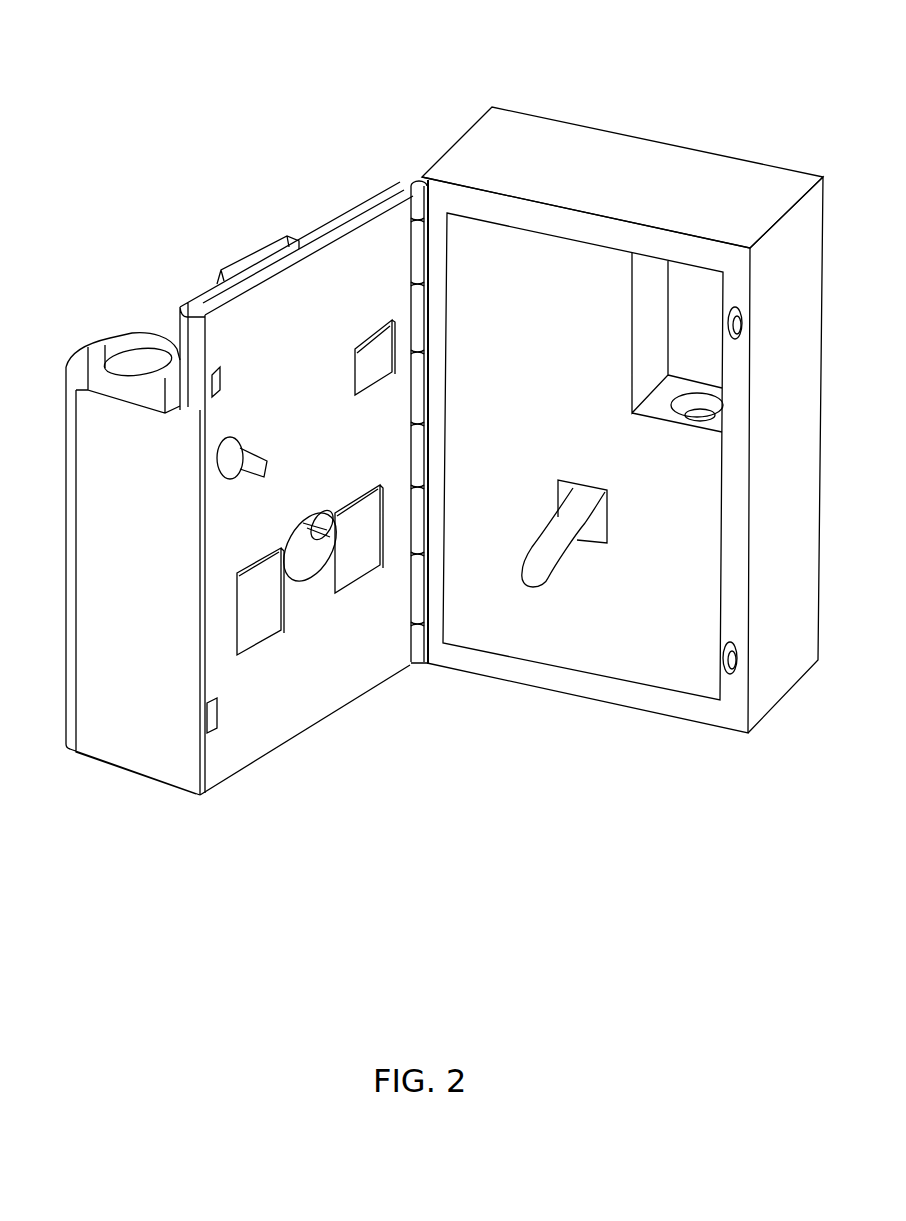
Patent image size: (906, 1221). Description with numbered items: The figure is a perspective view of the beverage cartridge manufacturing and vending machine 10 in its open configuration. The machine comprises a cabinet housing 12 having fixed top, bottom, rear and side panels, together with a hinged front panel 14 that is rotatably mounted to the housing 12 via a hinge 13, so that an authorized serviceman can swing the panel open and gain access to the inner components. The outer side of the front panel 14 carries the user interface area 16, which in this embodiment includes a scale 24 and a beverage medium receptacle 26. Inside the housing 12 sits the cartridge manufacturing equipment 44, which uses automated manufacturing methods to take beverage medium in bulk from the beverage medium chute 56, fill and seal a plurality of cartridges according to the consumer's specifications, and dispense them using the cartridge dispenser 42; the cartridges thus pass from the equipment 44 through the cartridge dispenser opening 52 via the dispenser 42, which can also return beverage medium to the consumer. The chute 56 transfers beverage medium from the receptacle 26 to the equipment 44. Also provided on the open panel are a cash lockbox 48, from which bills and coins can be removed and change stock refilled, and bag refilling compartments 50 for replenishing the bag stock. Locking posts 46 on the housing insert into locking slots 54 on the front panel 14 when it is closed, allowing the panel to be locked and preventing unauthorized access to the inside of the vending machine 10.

The vending machine 10 is at (468, 69).
The cabinet housing 12 is at (691, 152).
The hinge 13 is at (418, 197).
The hinged front panel 14 is at (136, 748).
The user interface area 16 is at (135, 235).
The scale 24 is at (280, 248).
The beverage medium receptacle 26 is at (162, 360).
The cartridge dispenser 42 is at (558, 538).
The cartridge manufacturing equipment 44 is at (530, 278).
The locking post 46 is at (733, 655).
The cash lockbox 48 is at (375, 360).
The bag refilling compartment 50 is at (259, 593).
The cartridge dispenser opening 52 is at (308, 540).
The locking slot 54 is at (207, 725).
The beverage medium chute 56 is at (230, 452).